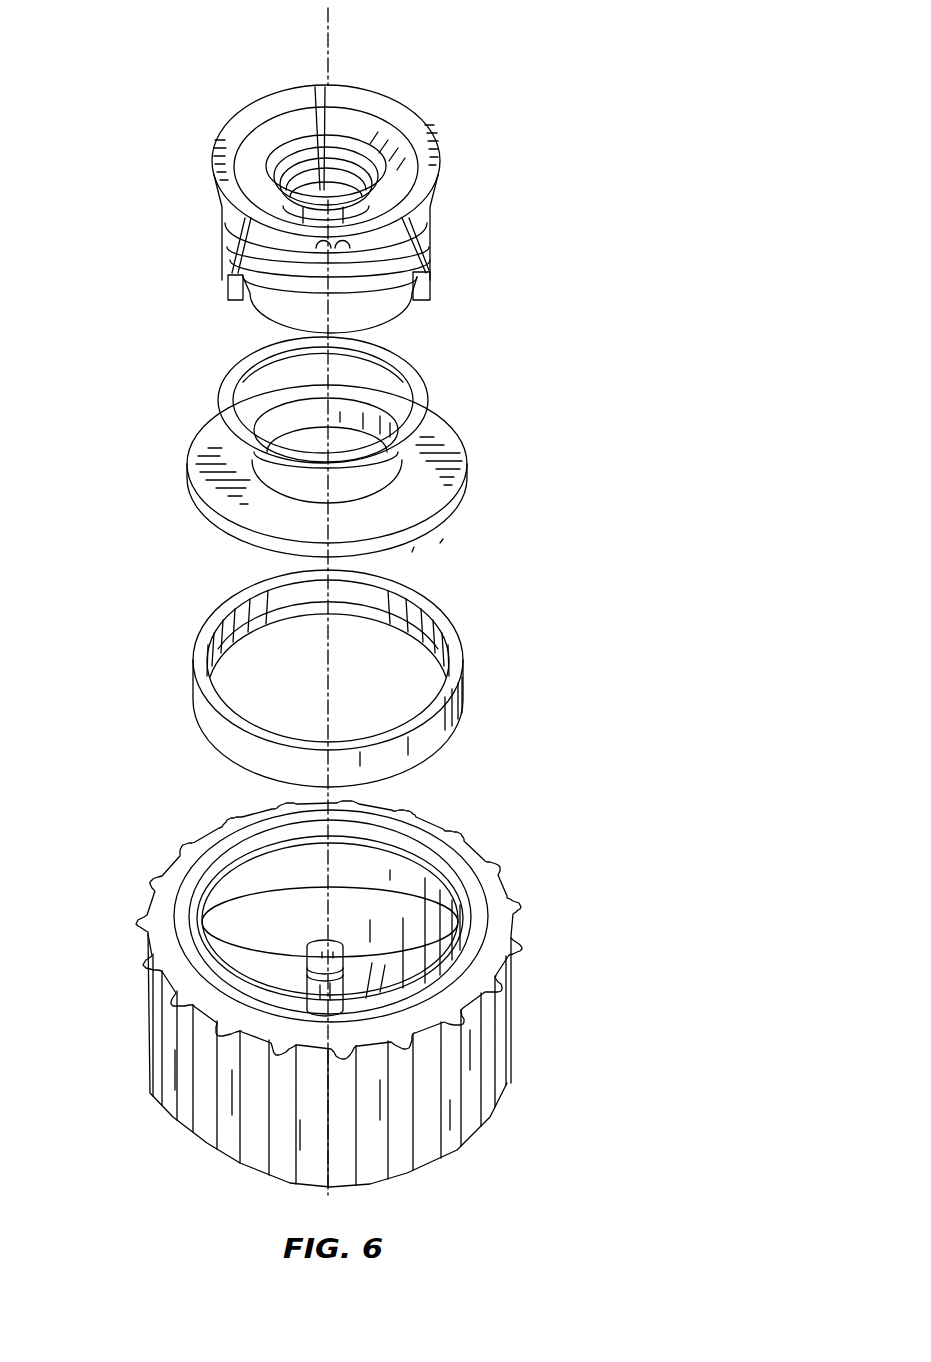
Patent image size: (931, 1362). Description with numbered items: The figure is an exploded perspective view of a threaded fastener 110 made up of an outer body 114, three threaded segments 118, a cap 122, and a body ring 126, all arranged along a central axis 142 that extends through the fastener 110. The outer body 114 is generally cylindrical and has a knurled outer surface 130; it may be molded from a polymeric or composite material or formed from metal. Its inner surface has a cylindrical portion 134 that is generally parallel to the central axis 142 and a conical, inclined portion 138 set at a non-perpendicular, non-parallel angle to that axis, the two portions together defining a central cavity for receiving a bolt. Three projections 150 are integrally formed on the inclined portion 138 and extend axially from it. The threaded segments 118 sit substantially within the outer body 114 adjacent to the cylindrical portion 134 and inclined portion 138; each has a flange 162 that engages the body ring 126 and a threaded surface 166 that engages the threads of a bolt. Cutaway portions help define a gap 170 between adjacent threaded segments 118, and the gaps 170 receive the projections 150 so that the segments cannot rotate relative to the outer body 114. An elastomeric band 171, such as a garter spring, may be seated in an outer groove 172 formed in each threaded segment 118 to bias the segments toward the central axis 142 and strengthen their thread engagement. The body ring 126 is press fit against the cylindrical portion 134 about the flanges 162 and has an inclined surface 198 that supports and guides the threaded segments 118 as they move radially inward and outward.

The threaded fastener 110 is at (548, 166).
The outer body 114 is at (520, 1003).
The threaded segments 118 is at (252, 150).
The cap 122 is at (425, 498).
The body ring 126 is at (447, 640).
The knurled outer surface 130 is at (207, 1138).
The cylindrical portion 134 is at (410, 878).
The inclined portion 138 is at (267, 980).
The central axis 142 is at (333, 64).
The projections 150 is at (313, 942).
The flange 162 is at (270, 107).
The threaded surface 166 is at (357, 190).
The gap 170 is at (243, 302).
The elastomeric band 171 is at (417, 368).
The outer groove 172 is at (255, 240).
The inclined surface 198 is at (222, 633).